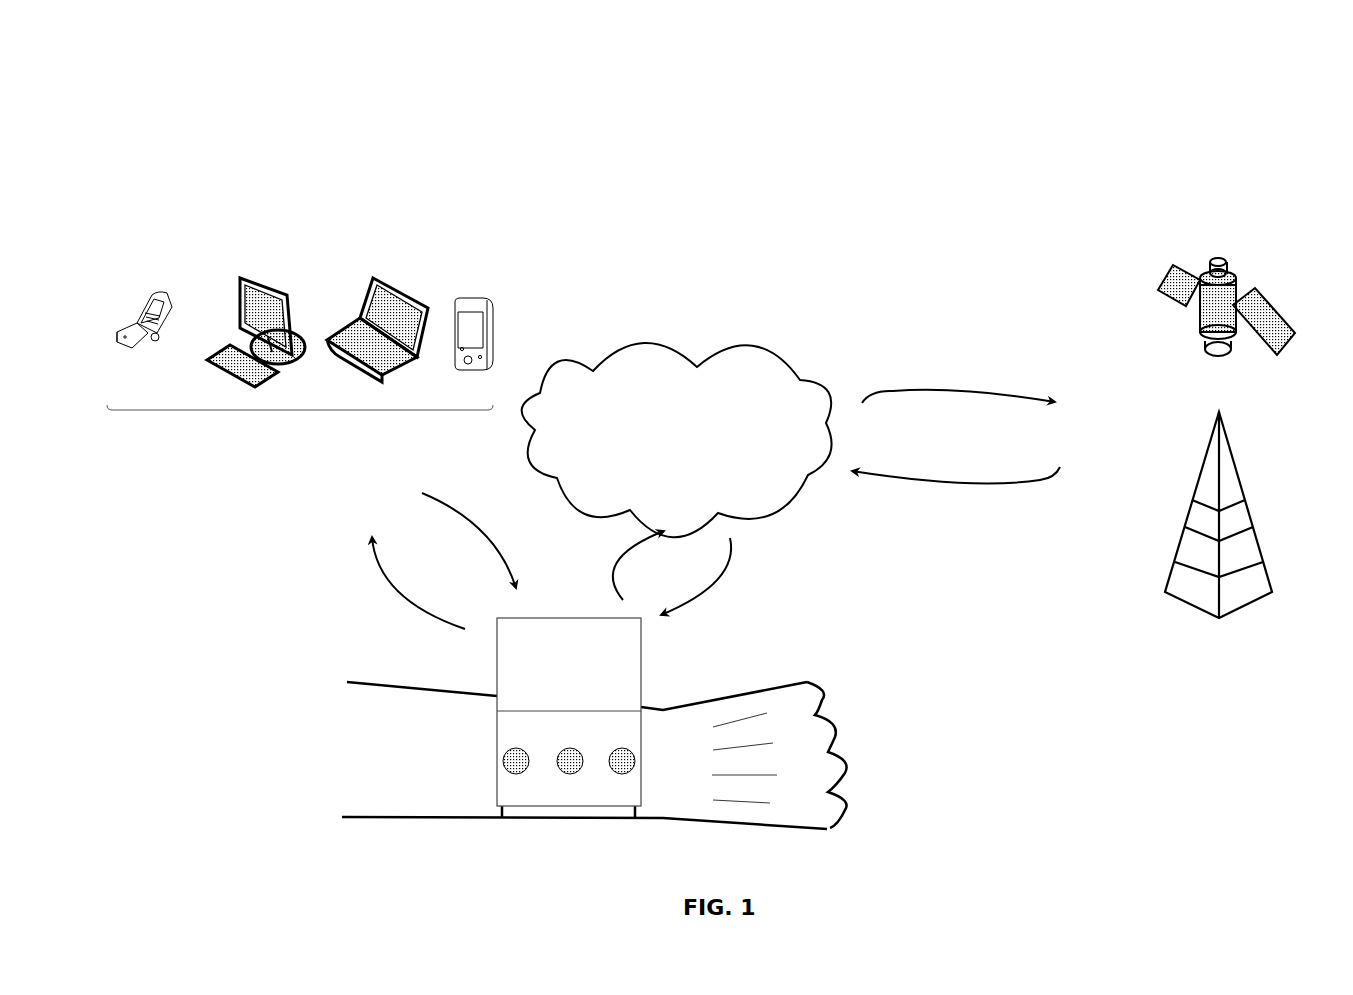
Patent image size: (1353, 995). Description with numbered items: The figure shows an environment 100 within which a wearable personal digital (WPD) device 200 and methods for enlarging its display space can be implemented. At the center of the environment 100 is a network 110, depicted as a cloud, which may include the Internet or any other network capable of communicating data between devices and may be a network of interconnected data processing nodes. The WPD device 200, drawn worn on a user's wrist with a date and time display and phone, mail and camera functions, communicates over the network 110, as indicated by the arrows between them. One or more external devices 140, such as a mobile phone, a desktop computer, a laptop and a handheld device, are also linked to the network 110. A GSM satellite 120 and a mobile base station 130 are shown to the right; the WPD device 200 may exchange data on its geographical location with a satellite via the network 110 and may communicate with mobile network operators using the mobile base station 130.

The environment 100 is at (1292, 130).
The network 110 is at (797, 373).
The GSM satellite 120 is at (1282, 327).
The mobile base station 130 is at (1245, 490).
The external devices 140 is at (300, 410).
The wearable personal digital (WPD) device 200 is at (497, 755).